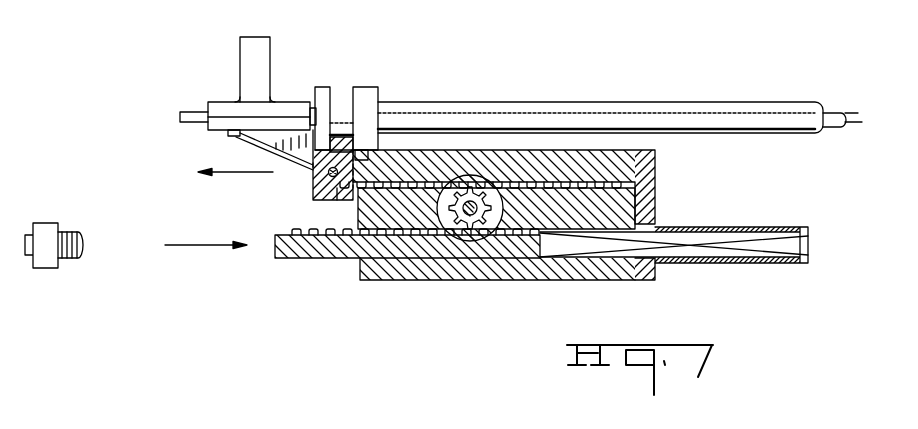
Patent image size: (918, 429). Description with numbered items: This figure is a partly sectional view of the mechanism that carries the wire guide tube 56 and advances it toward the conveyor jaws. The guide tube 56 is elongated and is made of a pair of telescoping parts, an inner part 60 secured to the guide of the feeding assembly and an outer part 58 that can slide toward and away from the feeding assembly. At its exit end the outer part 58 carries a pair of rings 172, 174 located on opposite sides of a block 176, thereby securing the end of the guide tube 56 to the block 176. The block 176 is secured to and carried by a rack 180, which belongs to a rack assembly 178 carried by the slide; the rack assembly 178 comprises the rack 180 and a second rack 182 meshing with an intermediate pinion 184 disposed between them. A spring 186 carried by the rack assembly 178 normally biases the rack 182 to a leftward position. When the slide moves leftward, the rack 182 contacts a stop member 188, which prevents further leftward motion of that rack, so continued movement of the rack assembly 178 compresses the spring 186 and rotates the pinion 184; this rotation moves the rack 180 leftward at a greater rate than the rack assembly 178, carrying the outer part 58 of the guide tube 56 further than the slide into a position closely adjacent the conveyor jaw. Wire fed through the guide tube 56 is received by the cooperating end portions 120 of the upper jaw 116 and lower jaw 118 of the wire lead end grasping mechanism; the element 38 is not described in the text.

The wire 38 is at (182, 117).
The guide tube 56 is at (635, 102).
The outer part of guide tube 58 is at (550, 102).
The inner part of guide tube 60 is at (834, 106).
The upper jaw 116 is at (239, 55).
The lower jaw 118 is at (290, 154).
The cooperating end portions 120 is at (285, 102).
The ring 172 is at (326, 106).
The ring 174 is at (365, 95).
The block 176 is at (355, 141).
The rack assembly 178 is at (447, 278).
The rack 180 is at (622, 173).
The rack 182 is at (510, 256).
The intermediate pinion 184 is at (488, 203).
The spring 186 is at (716, 250).
The stop member 188 is at (85, 241).